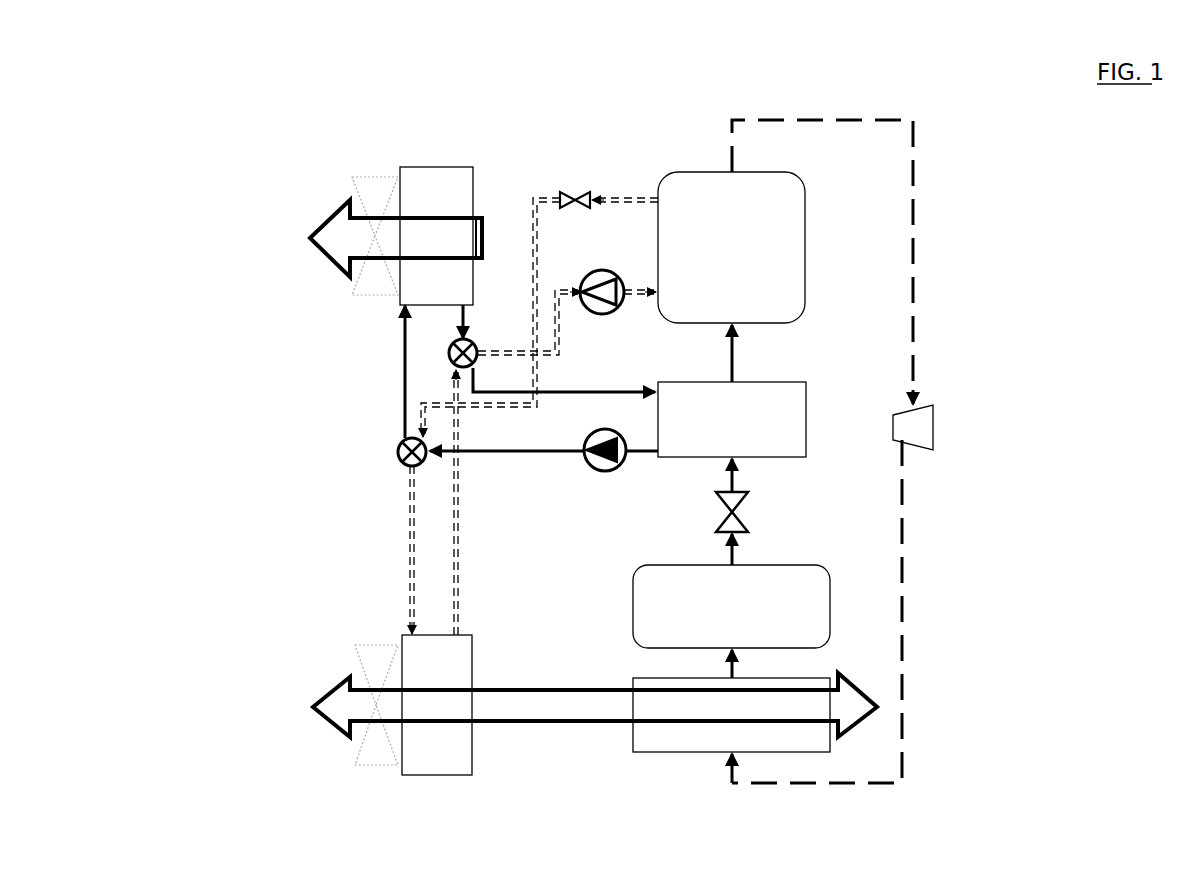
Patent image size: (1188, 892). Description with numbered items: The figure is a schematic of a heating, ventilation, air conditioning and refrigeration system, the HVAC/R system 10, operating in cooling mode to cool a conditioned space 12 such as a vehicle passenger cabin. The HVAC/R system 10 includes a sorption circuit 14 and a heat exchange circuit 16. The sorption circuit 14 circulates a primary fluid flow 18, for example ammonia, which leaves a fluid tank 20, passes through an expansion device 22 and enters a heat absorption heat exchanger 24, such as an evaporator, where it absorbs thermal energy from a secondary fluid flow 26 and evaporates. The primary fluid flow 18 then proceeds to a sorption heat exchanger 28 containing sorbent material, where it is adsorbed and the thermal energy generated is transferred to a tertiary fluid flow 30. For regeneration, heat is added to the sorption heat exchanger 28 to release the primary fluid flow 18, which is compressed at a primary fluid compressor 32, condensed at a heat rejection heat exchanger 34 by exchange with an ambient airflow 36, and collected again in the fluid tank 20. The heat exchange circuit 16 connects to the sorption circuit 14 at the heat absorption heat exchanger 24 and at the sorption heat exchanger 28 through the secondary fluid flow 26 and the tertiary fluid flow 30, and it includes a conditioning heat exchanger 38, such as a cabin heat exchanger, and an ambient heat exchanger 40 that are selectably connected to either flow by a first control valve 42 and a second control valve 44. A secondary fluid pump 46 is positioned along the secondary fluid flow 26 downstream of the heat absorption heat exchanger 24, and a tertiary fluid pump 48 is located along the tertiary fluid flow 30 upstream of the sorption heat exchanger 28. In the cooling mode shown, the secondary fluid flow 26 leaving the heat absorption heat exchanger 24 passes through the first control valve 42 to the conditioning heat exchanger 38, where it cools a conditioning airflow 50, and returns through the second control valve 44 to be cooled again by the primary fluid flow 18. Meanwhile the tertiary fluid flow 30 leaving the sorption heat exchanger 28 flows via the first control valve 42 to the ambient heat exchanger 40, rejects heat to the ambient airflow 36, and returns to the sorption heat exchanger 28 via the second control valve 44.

The HVAC/R system 10 is at (257, 160).
The conditioned space 12 is at (250, 253).
The sorption circuit 14 is at (695, 143).
The heat exchange circuit 16 is at (447, 145).
The primary fluid flow 18 is at (913, 230).
The fluid tank 20 is at (703, 621).
The expansion device 22 is at (737, 517).
The heat absorption heat exchanger 24 is at (713, 435).
The secondary fluid flow 26 is at (640, 393).
The sorption heat exchanger 28 is at (738, 269).
The tertiary fluid flow 30 is at (647, 198).
The primary fluid compressor 32 is at (933, 415).
The heat rejection heat exchanger 34 is at (657, 740).
The ambient airflow 36 is at (543, 686).
The conditioning heat exchanger 38 is at (446, 205).
The ambient heat exchanger 40 is at (448, 678).
The first control valve 42 is at (398, 455).
The second control valve 44 is at (448, 355).
The secondary fluid pump 46 is at (592, 437).
The tertiary fluid pump 48 is at (602, 273).
The conditioning airflow 50 is at (330, 237).